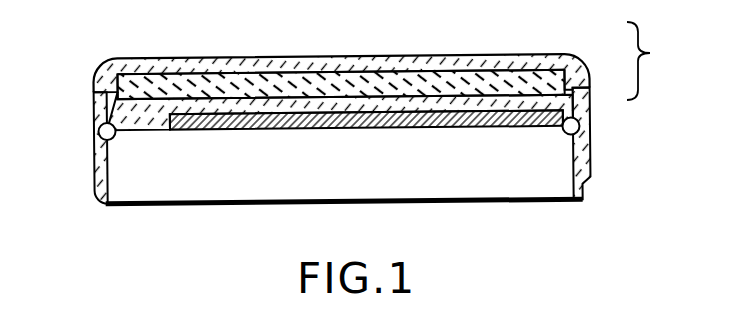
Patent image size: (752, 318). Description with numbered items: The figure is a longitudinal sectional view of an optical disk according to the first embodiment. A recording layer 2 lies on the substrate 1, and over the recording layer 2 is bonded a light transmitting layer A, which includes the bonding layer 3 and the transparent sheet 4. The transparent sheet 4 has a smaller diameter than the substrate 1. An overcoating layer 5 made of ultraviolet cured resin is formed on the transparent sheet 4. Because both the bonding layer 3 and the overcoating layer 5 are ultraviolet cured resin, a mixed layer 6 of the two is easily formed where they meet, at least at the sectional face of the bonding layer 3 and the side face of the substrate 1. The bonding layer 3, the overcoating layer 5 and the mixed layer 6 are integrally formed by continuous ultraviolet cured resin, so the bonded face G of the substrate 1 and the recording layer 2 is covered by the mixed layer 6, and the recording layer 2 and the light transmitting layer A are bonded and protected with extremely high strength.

The substrate 1 is at (558, 175).
The recording layer 2 is at (590, 125).
The bonding layer 3 is at (590, 92).
The transparent sheet 4 is at (590, 62).
The overcoating layer 5 is at (220, 61).
The mixed layer 6 is at (94, 102).
The light transmitting layer A is at (650, 61).
The bonded face G is at (111, 139).